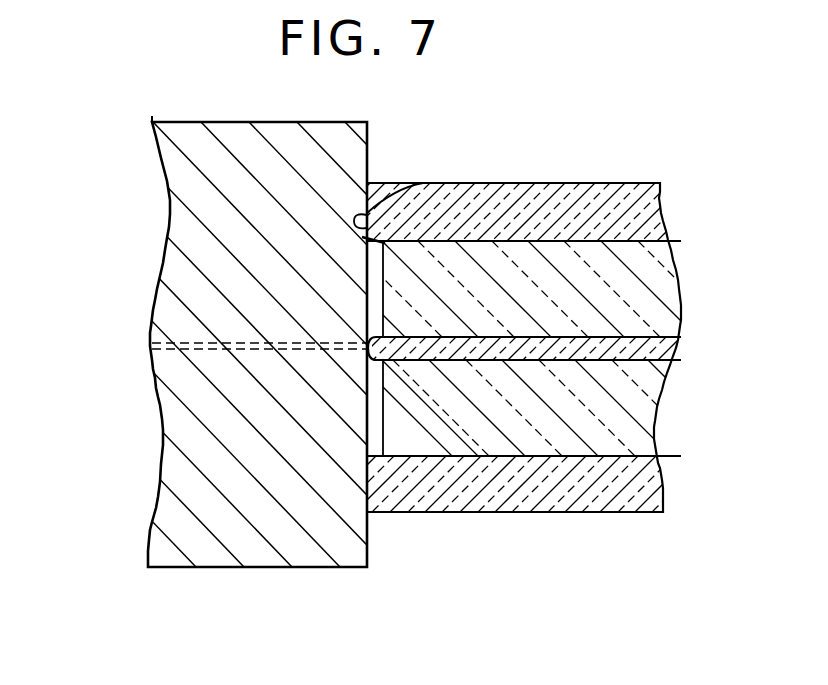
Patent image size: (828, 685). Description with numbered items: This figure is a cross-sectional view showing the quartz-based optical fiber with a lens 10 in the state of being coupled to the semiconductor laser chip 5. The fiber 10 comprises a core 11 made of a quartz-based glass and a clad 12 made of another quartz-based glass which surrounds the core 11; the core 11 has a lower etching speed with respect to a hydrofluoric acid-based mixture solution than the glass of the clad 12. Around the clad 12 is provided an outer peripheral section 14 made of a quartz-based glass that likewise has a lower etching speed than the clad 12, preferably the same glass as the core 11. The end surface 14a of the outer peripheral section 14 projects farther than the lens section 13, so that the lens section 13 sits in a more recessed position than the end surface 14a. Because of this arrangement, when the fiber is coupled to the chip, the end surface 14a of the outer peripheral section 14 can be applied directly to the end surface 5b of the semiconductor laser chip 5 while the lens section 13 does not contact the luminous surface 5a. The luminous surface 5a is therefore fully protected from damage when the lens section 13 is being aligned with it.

The semiconductor laser chip 5 is at (190, 199).
The luminous surface 5a is at (368, 340).
The end surface of the semiconductor laser chip 5b is at (367, 222).
The quartz-based optical fiber with a lens 10 is at (571, 536).
The core 11 is at (628, 350).
The clad 12 is at (528, 258).
The lens section 13 is at (372, 362).
The outer peripheral section 14 is at (597, 198).
The end surface of the outer peripheral section 14a is at (396, 190).